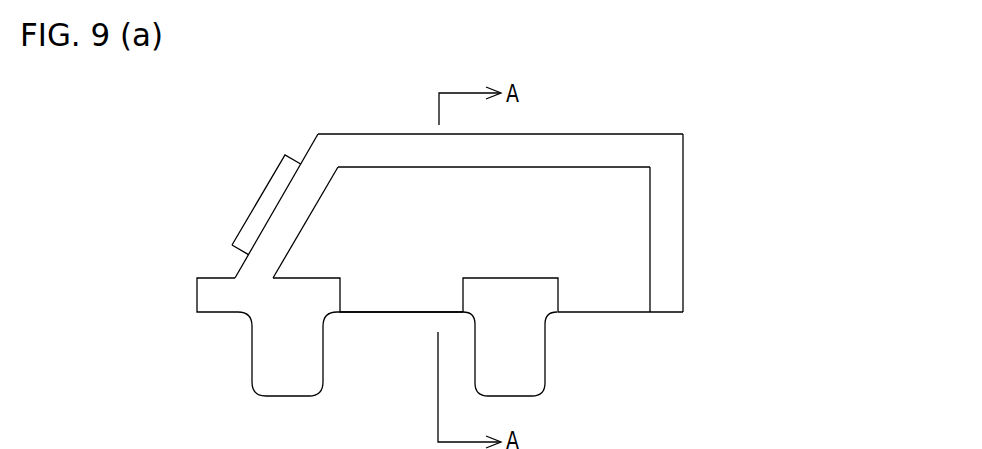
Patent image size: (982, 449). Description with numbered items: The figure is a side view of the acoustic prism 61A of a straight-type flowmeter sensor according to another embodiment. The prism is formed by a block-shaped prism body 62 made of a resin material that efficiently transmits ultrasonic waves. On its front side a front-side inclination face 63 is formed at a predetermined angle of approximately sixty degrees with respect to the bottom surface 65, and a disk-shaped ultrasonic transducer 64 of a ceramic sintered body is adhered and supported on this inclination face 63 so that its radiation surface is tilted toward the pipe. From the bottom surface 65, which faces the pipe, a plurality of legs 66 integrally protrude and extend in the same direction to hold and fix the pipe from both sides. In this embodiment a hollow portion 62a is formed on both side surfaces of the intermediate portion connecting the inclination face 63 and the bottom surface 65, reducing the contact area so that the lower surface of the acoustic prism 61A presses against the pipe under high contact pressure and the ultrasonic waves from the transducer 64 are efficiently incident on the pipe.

The acoustic prism 61A is at (683, 187).
The prism body 62 is at (351, 150).
The hollow portion 62a is at (397, 252).
The front-side inclination face 63 is at (237, 233).
The ultrasonic transducer 64 is at (260, 198).
The bottom surface 65 is at (663, 314).
The leg 66 is at (273, 360).